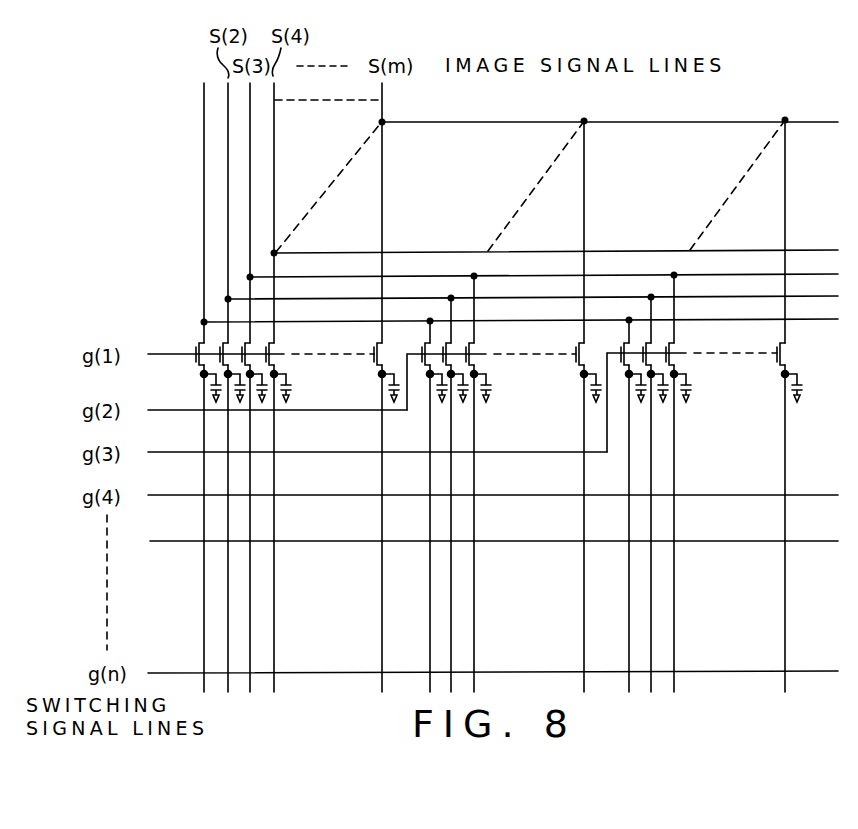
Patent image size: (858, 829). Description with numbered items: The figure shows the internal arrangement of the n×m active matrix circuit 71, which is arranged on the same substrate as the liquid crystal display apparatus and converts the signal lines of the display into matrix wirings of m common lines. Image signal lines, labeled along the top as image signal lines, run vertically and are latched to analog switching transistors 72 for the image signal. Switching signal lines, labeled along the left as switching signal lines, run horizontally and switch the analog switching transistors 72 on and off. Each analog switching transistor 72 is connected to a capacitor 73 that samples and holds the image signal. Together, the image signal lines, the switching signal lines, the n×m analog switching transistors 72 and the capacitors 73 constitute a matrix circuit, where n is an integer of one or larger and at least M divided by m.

The n×m active matrix circuit 71 is at (192, 373).
The analog switching transistor 72 is at (196, 369).
The capacitor 73 is at (292, 385).